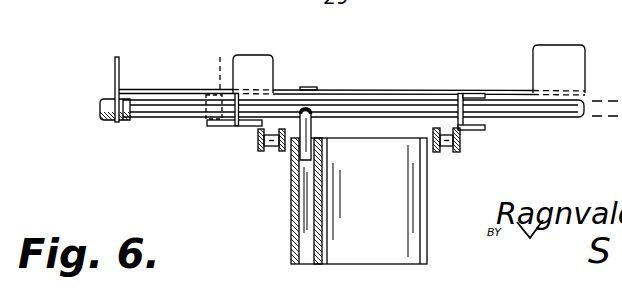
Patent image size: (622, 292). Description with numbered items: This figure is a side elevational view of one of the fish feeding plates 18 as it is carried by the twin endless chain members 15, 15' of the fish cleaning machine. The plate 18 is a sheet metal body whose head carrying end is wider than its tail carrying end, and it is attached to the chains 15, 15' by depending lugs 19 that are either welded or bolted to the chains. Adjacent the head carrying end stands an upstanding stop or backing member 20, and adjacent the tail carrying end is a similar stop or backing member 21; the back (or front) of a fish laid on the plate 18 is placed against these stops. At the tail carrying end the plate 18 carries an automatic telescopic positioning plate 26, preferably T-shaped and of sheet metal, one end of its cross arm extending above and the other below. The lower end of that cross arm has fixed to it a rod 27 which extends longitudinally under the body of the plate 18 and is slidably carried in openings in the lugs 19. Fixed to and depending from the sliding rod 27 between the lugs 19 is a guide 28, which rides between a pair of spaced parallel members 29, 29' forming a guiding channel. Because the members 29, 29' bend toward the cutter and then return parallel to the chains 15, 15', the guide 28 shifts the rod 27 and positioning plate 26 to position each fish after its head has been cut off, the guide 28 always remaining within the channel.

The telescopic positioning plate 26 is at (181, 89).
The fish feeding plate 18 is at (368, 91).
The rod 27 is at (145, 108).
The stop or backing member 21 is at (252, 62).
The stop or backing member 20 is at (548, 50).
The lug 19 is at (241, 128).
The endless chain member 15 is at (261, 153).
The endless chain member 15' is at (460, 160).
The guide 28 is at (311, 119).
The spaced parallel member 29 is at (325, 201).
The spaced parallel member 29' is at (350, 201).